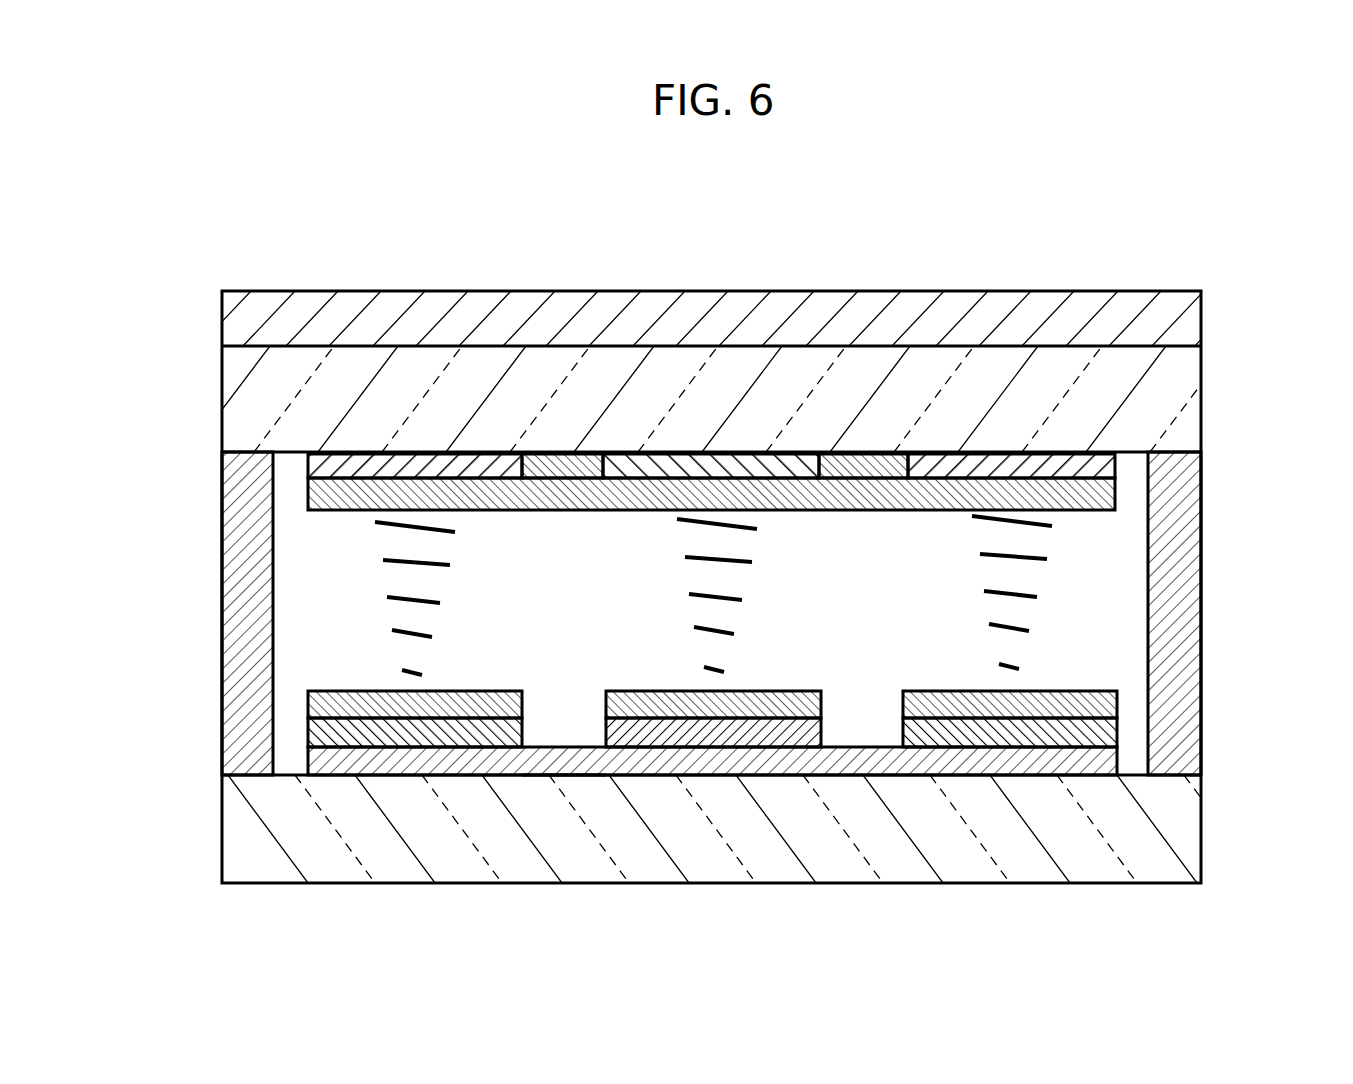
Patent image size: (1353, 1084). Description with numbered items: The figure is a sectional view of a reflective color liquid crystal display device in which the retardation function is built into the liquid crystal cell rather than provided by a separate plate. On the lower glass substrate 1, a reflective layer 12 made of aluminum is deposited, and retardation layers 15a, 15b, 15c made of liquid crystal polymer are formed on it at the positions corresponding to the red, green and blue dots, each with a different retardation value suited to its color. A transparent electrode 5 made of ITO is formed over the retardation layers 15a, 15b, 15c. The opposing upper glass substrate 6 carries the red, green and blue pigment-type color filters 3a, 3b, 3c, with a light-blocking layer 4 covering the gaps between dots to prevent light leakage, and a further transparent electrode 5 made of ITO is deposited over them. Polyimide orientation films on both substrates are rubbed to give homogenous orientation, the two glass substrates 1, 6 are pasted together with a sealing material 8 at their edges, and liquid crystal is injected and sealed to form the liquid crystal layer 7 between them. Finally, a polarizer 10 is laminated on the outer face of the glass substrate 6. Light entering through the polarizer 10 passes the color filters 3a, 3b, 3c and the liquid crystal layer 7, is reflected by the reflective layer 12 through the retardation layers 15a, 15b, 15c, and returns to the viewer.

The glass substrate 1 is at (1145, 850).
The color filter 3a is at (372, 462).
The color filter 3b is at (752, 460).
The color filter 3c is at (1017, 458).
The light-blocking layer 4 is at (543, 773).
The transparent electrode 5 is at (1113, 492).
The glass substrate 6 is at (1183, 373).
The liquid crystal layer 7 is at (1075, 602).
The sealing material 8 is at (238, 595).
The polarizer 10 is at (1178, 315).
The reflective layer 12 is at (1103, 759).
The retardation layer 15a is at (382, 747).
The retardation layer 15b is at (710, 745).
The retardation layer 15c is at (993, 748).